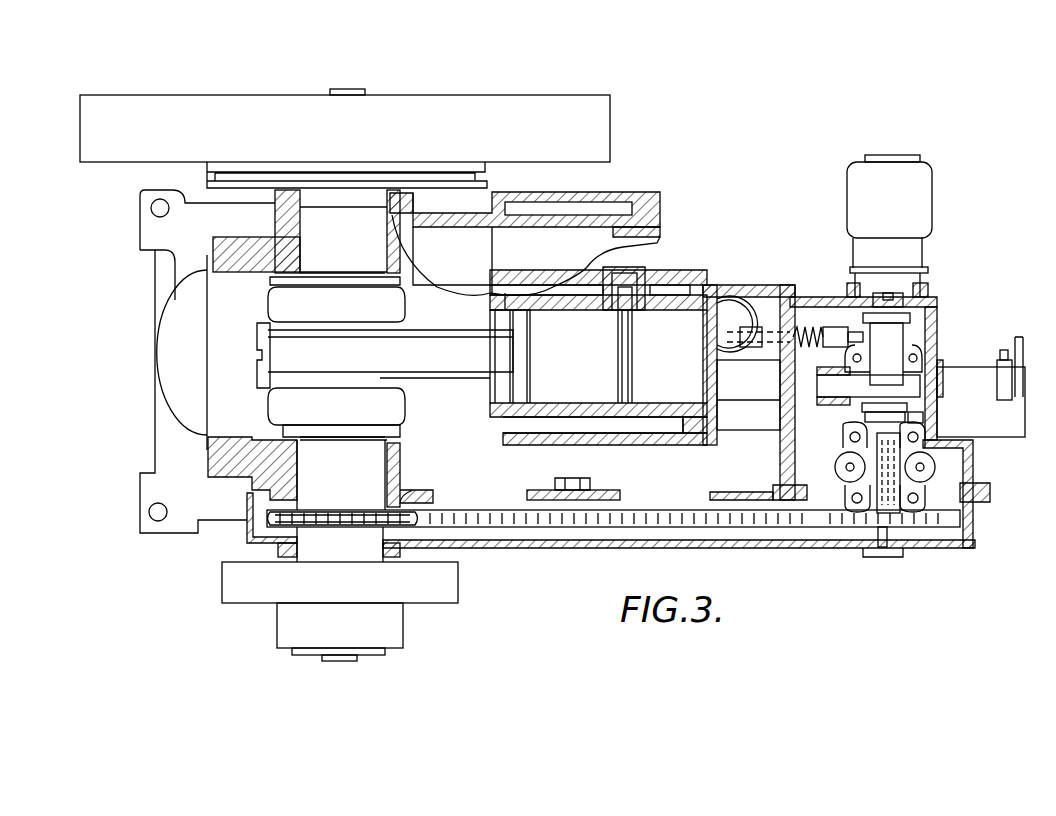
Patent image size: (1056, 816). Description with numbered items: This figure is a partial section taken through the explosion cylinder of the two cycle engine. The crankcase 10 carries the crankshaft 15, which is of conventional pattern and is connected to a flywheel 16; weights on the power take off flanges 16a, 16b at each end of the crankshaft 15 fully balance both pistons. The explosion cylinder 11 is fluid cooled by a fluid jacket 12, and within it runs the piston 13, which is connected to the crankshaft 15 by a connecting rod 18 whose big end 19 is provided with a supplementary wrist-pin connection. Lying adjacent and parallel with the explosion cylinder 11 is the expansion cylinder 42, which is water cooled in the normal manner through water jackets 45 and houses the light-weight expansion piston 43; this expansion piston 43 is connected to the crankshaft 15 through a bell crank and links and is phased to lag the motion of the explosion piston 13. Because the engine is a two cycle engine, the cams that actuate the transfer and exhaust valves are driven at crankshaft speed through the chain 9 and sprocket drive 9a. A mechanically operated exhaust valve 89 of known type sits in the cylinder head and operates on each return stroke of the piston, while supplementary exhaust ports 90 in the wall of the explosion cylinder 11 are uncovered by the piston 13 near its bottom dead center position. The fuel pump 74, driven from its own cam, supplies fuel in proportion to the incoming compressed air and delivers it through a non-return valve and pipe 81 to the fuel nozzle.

The chain 9 is at (482, 545).
The sprocket drive 9a is at (374, 535).
The crankcase 10 is at (165, 380).
The explosion cylinder 11 is at (648, 400).
The fluid jacket 12 is at (643, 432).
The piston 13 is at (515, 347).
The crankshaft 15 is at (270, 407).
The flywheel 16 is at (606, 120).
The power take off flange 16a is at (445, 180).
The power take off flange 16b is at (248, 600).
The connecting rod 18 is at (453, 372).
The big end 19 is at (270, 340).
The expansion cylinder 42 is at (440, 228).
The expansion piston 43 is at (512, 250).
The water jacket 45 is at (598, 200).
The fuel pump 74 is at (965, 375).
The pipe 81 is at (1018, 347).
The exhaust valve 89 is at (710, 335).
The supplementary exhaust port 90 is at (640, 318).